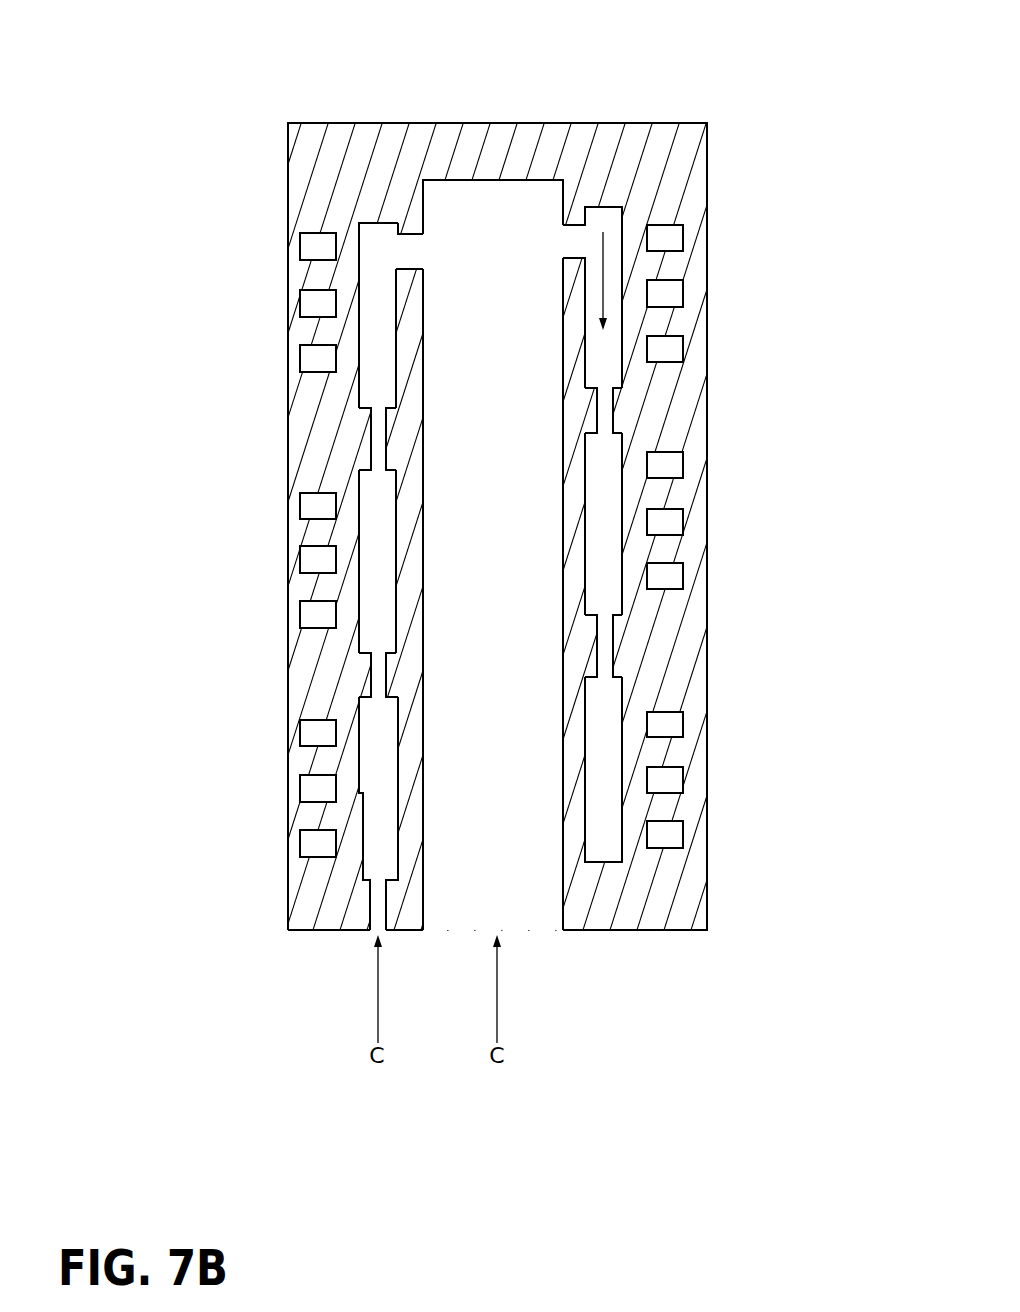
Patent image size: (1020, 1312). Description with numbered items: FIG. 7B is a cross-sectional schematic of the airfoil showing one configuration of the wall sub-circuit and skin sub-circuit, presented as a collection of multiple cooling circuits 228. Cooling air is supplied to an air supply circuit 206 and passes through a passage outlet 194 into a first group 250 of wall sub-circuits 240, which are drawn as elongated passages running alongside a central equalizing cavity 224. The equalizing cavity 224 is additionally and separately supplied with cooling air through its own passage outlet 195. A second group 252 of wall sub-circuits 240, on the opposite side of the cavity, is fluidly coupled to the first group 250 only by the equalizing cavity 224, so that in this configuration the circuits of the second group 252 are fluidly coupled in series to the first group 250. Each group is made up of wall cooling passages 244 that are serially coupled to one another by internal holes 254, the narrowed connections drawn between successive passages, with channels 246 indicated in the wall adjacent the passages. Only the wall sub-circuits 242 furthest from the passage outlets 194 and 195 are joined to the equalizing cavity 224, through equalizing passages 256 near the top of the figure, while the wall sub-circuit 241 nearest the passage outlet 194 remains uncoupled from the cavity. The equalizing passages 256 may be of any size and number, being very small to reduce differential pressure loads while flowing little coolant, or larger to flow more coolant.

The multiple cooling circuits 228 is at (290, 52).
The electrodes 242 is at (315, 216).
The wall sub-circuits 240 is at (374, 204).
The equalizing passages 256 is at (570, 243).
The channels 246 is at (673, 350).
The internal holes 254 is at (378, 452).
The equalizing cavity 224 is at (514, 570).
The wall cooling passages 244 is at (605, 785).
The wall sub-circuit 241 is at (377, 848).
The air supply circuit 206 is at (300, 983).
The passage outlet 194 is at (380, 930).
The first group 250 is at (393, 892).
The second group 252 is at (612, 878).
The passage outlet 195 is at (505, 922).